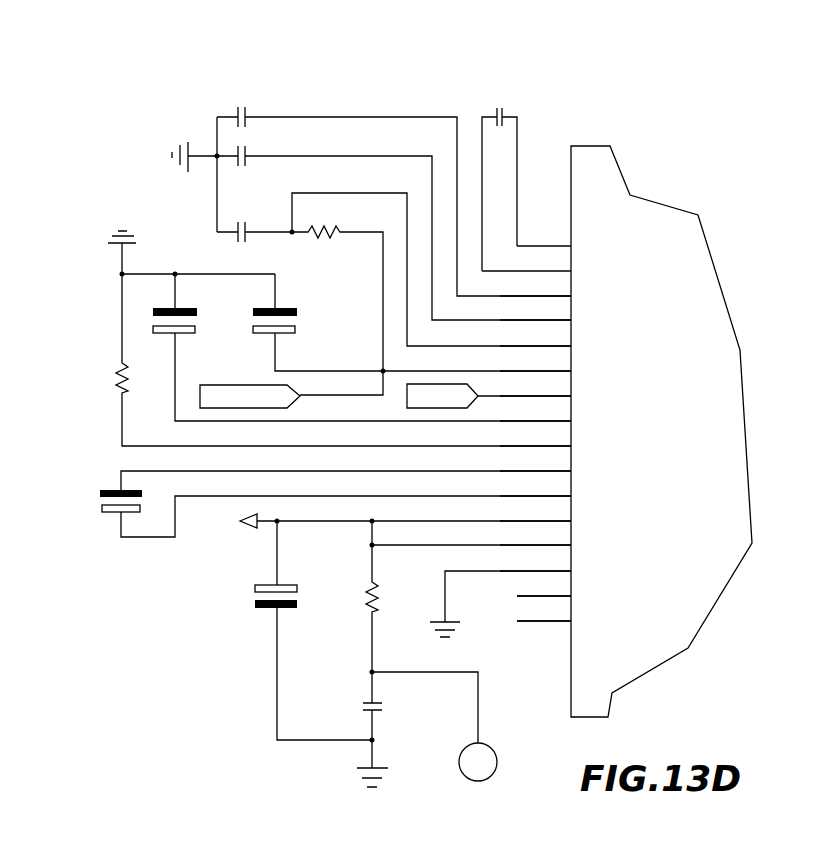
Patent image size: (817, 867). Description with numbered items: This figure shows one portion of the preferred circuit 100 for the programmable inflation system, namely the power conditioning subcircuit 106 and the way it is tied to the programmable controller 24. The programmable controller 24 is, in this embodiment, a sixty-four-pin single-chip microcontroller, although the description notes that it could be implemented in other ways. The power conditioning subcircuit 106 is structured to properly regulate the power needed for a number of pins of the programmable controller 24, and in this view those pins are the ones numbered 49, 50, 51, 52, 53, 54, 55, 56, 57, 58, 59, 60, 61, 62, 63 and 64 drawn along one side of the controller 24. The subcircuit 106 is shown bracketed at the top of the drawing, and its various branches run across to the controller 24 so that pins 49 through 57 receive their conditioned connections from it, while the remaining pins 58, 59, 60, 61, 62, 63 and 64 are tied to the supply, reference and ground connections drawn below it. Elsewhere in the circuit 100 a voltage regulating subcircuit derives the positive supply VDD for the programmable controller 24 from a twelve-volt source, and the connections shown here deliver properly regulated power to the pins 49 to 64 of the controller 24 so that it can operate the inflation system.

The preferred circuit 100 is at (113, 164).
The power conditioning subcircuit 106 is at (535, 87).
The programmable controller 24 is at (719, 494).
The LCA pin 49 is at (544, 237).
The LCB pin 50 is at (526, 262).
The V1 pin 51 is at (535, 287).
The V2 pin 52 is at (535, 311).
The V3 pin 53 is at (535, 337).
The VDDA pin 54 is at (535, 362).
The VS pin 55 is at (535, 387).
The VGG pin 56 is at (535, 412).
The VSSP pin 57 is at (535, 437).
The CB pin 58 is at (535, 462).
The CA pin 59 is at (535, 487).
The VDDP pin 60 is at (535, 512).
The VDD pin 61 is at (535, 536).
The VSS pin 62 is at (535, 562).
The XOUT pin 63 is at (544, 587).
The XIN pin 64 is at (544, 612).